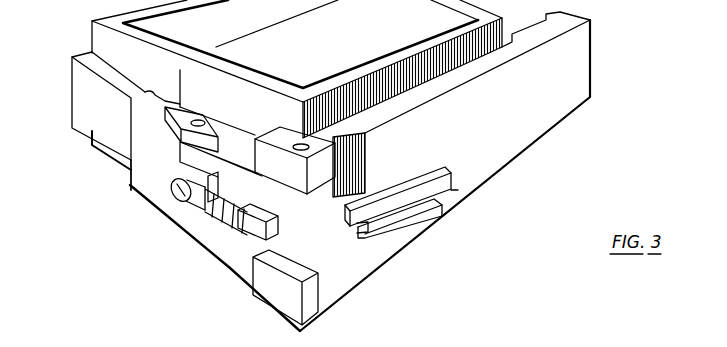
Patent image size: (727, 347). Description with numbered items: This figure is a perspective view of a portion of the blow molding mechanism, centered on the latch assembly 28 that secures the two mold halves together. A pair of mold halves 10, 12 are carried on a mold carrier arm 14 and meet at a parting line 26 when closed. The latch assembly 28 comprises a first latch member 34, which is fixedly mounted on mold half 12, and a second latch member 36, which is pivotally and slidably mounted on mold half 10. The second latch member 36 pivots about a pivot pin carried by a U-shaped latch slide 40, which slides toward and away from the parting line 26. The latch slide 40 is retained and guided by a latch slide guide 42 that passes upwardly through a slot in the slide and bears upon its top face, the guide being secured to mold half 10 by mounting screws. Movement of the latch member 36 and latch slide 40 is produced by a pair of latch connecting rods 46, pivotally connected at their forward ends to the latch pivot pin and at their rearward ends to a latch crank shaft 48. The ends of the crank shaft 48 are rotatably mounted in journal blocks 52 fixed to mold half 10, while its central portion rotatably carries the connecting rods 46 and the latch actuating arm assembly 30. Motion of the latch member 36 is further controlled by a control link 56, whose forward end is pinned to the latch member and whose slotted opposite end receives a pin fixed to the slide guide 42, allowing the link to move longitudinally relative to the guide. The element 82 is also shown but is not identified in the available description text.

The mold half 10 is at (338, 51).
The mold half 12 is at (259, 24).
The mold carrier arm 14 is at (592, 34).
The parting line 26 is at (180, 73).
The latch assembly 28 is at (126, 186).
The latch actuating arm assembly 30 is at (452, 186).
The first latch member 34 is at (72, 108).
The second latch member 36 is at (141, 219).
The latch slide 40 is at (238, 155).
The latch slide guide 42 is at (257, 212).
The latch connecting rods 46 is at (222, 174).
The latch crank shaft 48 is at (333, 190).
The journal blocks 52 is at (330, 160).
The control link 56 is at (198, 214).
The lower rail 82 is at (412, 232).